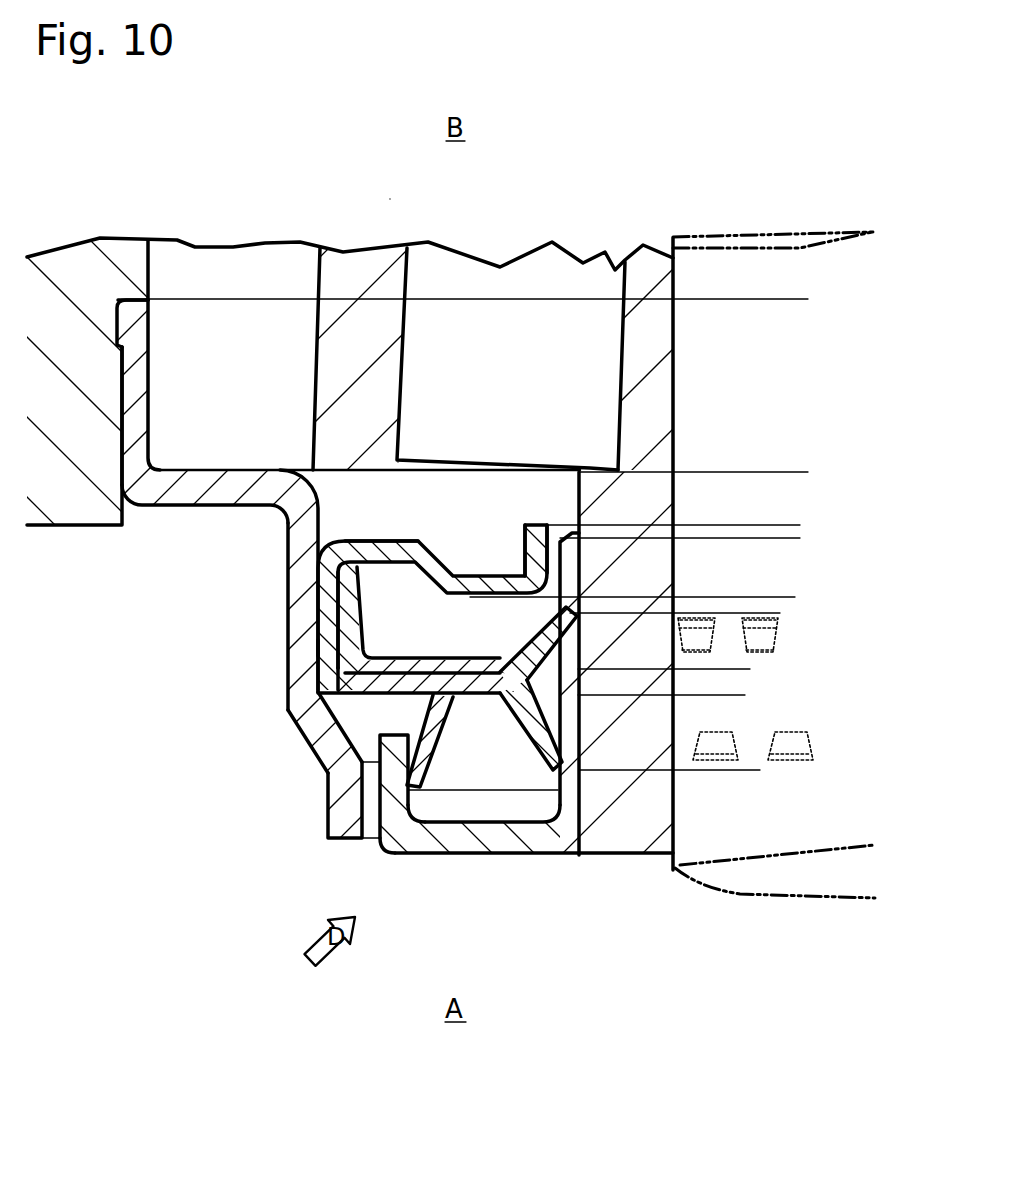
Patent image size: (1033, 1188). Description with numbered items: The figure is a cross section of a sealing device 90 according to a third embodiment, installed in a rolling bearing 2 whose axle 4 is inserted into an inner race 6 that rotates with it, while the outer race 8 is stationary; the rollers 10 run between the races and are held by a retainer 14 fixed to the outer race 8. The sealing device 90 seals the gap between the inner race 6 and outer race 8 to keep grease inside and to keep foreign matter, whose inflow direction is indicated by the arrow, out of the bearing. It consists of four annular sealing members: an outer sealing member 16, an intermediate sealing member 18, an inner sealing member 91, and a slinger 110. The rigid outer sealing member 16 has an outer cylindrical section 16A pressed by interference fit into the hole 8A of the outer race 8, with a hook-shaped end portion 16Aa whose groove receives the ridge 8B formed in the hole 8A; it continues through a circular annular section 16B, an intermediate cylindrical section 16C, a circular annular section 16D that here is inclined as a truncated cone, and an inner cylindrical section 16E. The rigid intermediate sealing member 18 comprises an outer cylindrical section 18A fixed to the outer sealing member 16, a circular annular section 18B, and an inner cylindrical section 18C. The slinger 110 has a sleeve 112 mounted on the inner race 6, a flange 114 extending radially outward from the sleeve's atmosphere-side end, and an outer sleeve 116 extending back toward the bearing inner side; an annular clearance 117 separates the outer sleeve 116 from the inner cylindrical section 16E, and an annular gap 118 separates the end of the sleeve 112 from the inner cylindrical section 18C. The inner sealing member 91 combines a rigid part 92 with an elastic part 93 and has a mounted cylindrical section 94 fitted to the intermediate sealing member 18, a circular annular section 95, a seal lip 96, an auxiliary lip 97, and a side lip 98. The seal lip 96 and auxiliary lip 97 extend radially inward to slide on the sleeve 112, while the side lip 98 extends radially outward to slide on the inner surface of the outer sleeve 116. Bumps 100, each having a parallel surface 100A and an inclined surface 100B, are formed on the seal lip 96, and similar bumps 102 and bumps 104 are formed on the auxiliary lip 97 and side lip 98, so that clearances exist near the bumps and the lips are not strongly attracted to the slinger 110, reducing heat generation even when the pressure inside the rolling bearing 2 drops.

The rolling bearing 2 is at (394, 203).
The axle 4 is at (752, 233).
The inner race 6 is at (636, 270).
The outer race 8 is at (516, 594).
The hole 8A is at (135, 430).
The ridge 8B is at (140, 338).
The rollers 10 is at (443, 277).
The retainer 14 is at (273, 243).
The outer sealing member 16 is at (516, 550).
The outer cylindrical section 16A is at (143, 375).
The end portion 16Aa is at (147, 306).
The circular annular section 16B is at (233, 472).
The intermediate cylindrical section 16C is at (292, 572).
The circular annular section 16D is at (327, 743).
The inner cylindrical section 16E is at (337, 815).
The intermediate sealing member 18 is at (516, 594).
The outer cylindrical section 18A is at (318, 617).
The circular annular section 18B is at (400, 540).
The inner cylindrical section 18C is at (527, 530).
The sealing device 90 is at (516, 594).
The inner sealing member 91 is at (346, 703).
The rigid part 92 is at (357, 647).
The elastic part 93 is at (425, 655).
The mounted cylindrical section 94 is at (316, 648).
The circular annular section 95 is at (460, 667).
The seal lip 96 is at (545, 628).
The auxiliary lip 97 is at (537, 750).
The side lip 98 is at (432, 770).
The bumps 100 is at (716, 599).
The parallel surface 100A is at (768, 625).
The inclined surface 100B is at (766, 641).
The bumps 102 is at (560, 745).
The bumps 104 is at (350, 787).
The slinger 110 is at (516, 594).
The sleeve 112 is at (562, 765).
The flange 114 is at (507, 845).
The outer sleeve 116 is at (417, 822).
The annular clearance 117 is at (376, 833).
The annular gap 118 is at (555, 540).